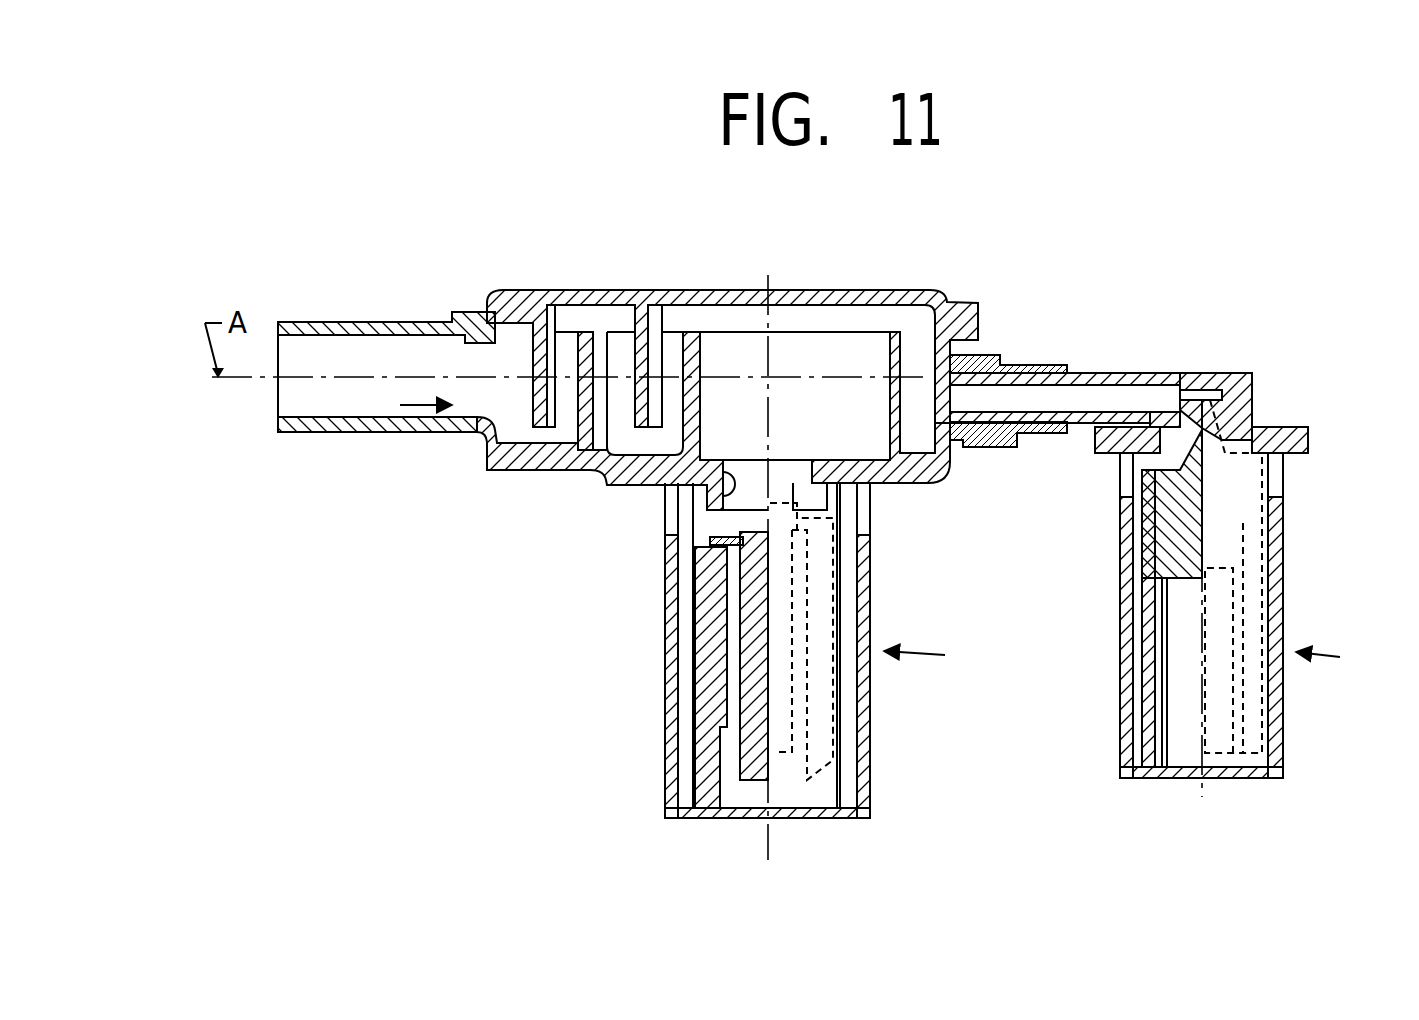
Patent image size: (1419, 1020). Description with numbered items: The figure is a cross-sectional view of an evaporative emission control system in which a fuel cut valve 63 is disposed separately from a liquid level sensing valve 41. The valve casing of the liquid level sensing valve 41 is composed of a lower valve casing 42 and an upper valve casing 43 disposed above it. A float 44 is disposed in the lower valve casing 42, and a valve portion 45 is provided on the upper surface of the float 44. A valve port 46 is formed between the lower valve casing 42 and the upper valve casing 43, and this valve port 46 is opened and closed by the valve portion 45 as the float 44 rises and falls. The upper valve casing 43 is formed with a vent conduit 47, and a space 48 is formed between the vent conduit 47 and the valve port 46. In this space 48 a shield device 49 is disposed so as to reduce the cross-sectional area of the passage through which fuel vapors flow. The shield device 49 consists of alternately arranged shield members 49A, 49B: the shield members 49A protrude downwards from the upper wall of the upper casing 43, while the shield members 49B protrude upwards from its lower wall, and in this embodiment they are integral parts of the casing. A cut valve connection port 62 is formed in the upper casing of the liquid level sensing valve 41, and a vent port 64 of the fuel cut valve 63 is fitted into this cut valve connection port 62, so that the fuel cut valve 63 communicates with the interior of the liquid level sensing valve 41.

The liquid level sensing valve 41 is at (778, 650).
The lower valve casing 42 is at (668, 675).
The upper valve casing 43 is at (843, 290).
The float 44 is at (707, 738).
The valve portion 45 is at (718, 543).
The valve port 46 is at (690, 490).
The vent conduit 47 is at (332, 412).
The space 48 is at (750, 372).
The shield device 49 is at (420, 410).
The shield members 49A is at (522, 384).
The shield members 49B is at (578, 415).
The cut valve connection port 62 is at (990, 357).
The fuel cut valve 63 is at (1238, 589).
The vent port 64 is at (1130, 373).